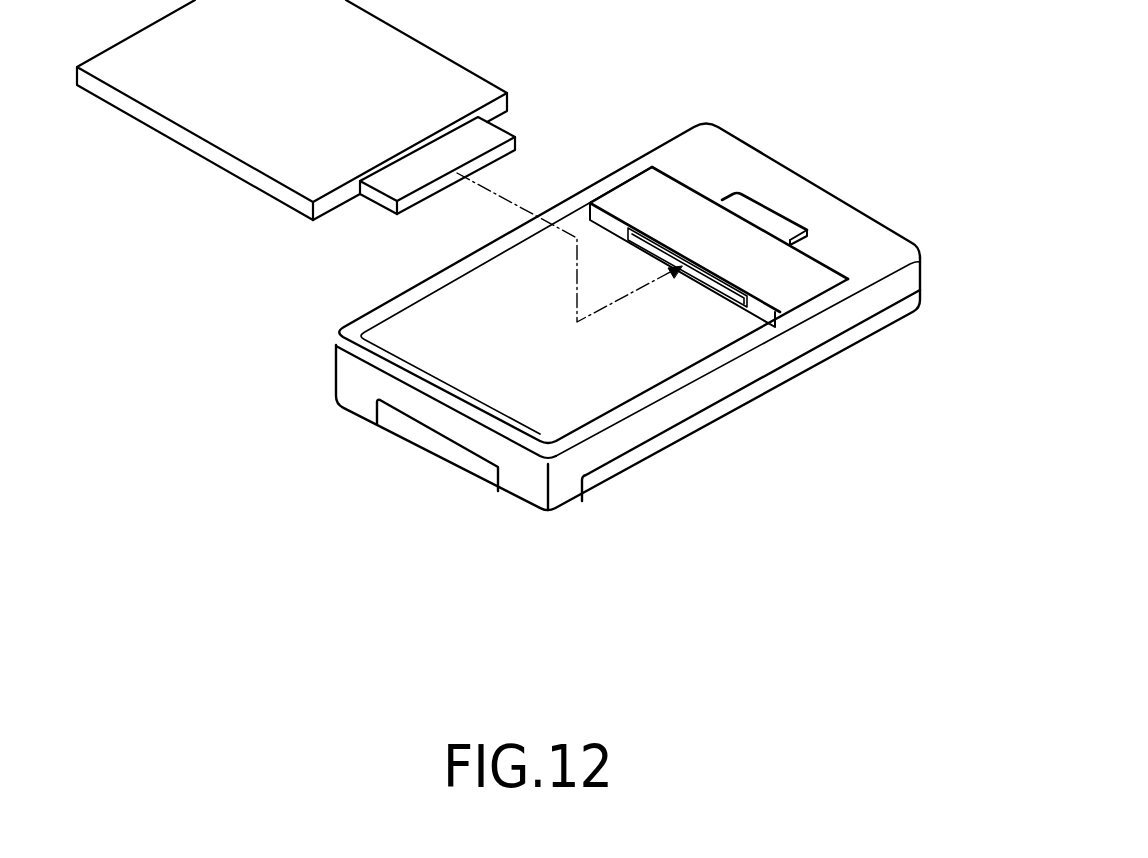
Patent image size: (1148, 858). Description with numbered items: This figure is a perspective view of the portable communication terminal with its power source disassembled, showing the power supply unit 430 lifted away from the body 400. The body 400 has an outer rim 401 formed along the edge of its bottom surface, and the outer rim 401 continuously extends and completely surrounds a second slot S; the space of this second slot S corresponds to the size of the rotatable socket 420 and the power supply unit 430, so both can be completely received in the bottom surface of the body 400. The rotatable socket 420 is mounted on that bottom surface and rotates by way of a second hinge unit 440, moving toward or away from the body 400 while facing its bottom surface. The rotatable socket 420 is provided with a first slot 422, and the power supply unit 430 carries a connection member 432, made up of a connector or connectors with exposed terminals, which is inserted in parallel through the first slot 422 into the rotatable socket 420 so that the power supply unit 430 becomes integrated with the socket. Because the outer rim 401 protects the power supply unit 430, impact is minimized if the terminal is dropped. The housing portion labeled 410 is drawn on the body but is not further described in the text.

The body 400 is at (604, 342).
The outer rim 401 is at (530, 444).
The cradle housing 410 is at (707, 413).
The rotatable socket 420 is at (679, 203).
The first slot 422 is at (717, 292).
The power supply unit 430 is at (435, 65).
The connection member 432 is at (482, 137).
The second hinge unit 440 is at (764, 215).
The second slot S is at (555, 408).